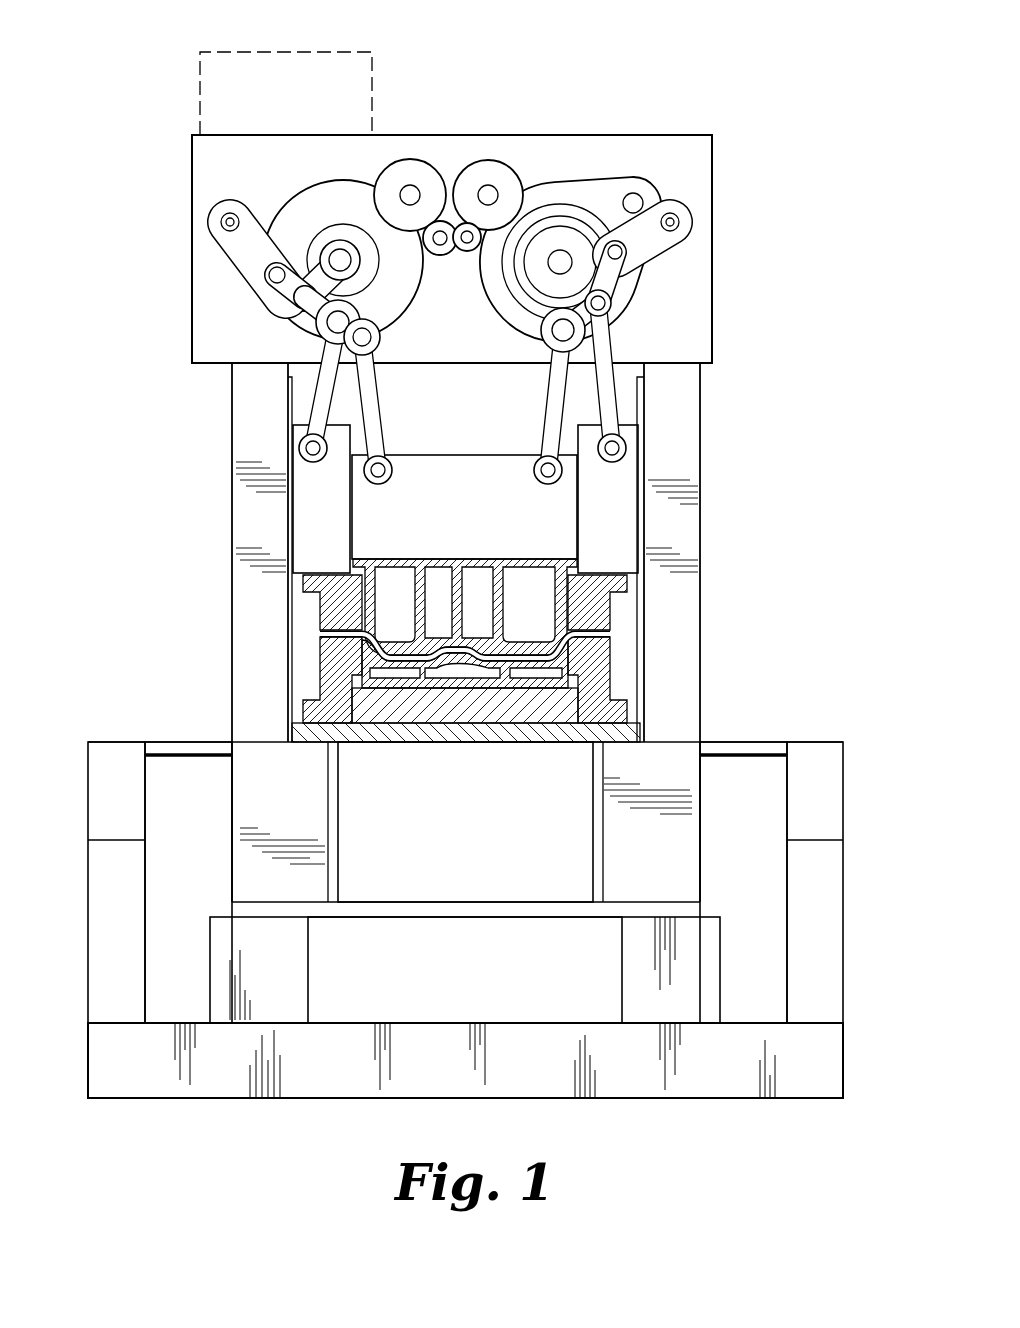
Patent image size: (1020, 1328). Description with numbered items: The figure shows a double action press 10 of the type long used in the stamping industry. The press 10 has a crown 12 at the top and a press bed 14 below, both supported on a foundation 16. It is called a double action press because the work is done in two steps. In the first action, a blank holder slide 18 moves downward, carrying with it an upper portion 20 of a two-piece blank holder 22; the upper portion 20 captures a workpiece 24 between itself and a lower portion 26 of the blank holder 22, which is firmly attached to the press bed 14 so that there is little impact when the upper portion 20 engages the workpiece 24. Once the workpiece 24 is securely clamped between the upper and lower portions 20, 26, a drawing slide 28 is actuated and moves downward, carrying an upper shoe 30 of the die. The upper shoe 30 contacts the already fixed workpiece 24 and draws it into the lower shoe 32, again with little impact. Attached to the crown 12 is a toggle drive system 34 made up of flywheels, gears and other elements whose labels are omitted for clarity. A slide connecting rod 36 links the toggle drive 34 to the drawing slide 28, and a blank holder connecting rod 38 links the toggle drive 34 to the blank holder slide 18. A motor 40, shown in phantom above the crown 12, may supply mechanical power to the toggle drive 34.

The double action press 10 is at (100, 130).
The crown 12 is at (718, 318).
The press bed 14 is at (700, 818).
The foundation 16 is at (843, 905).
The blank holder slide 18 is at (305, 421).
The upper portion of blank holder 20 is at (320, 595).
The blank holder 22 is at (316, 637).
The workpiece 24 is at (612, 632).
The lower portion of blank holder 26 is at (628, 668).
The drawing slide 28 is at (453, 453).
The upper shoe 30 is at (505, 596).
The lower shoe 32 is at (470, 663).
The toggle drive system 34 is at (690, 181).
The slide connecting rod 36 is at (548, 381).
The blank holder connecting rod 38 is at (608, 382).
The motor 40 is at (318, 52).